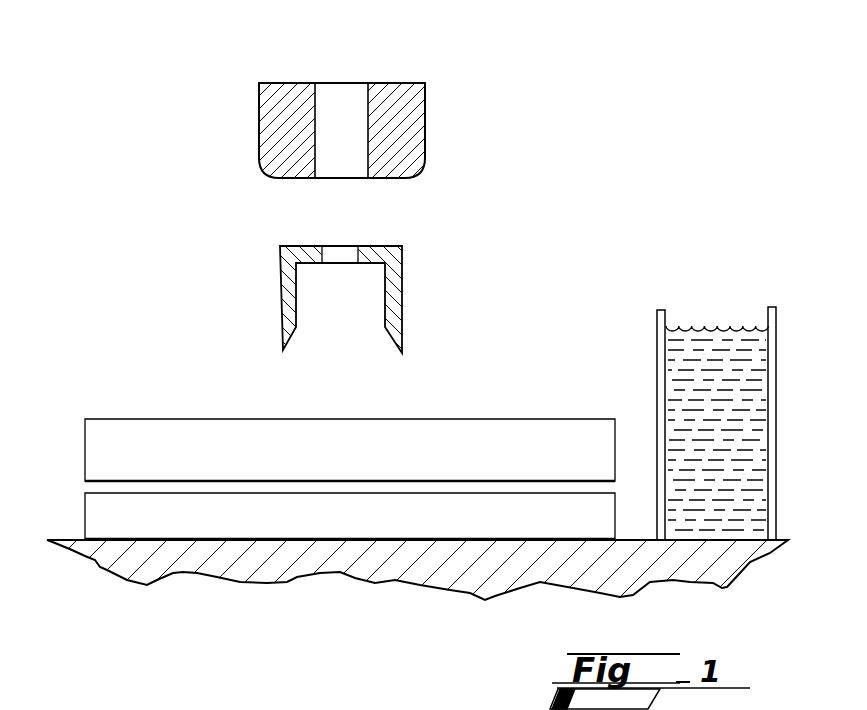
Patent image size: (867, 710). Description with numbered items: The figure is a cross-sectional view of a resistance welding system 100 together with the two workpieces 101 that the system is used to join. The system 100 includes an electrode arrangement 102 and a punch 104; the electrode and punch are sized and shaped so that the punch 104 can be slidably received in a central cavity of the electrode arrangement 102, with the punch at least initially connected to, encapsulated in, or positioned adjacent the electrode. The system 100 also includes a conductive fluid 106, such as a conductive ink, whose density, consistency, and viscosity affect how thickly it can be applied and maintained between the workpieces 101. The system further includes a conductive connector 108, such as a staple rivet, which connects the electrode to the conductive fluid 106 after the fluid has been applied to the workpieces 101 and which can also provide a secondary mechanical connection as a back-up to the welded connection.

The resistance welding system 100 is at (337, 361).
The workpieces 101 is at (70, 440).
The electrode arrangement 102 is at (366, 361).
The punch 104 is at (343, 83).
The conductive fluid 106 is at (703, 277).
The conductive connector 108 is at (260, 302).